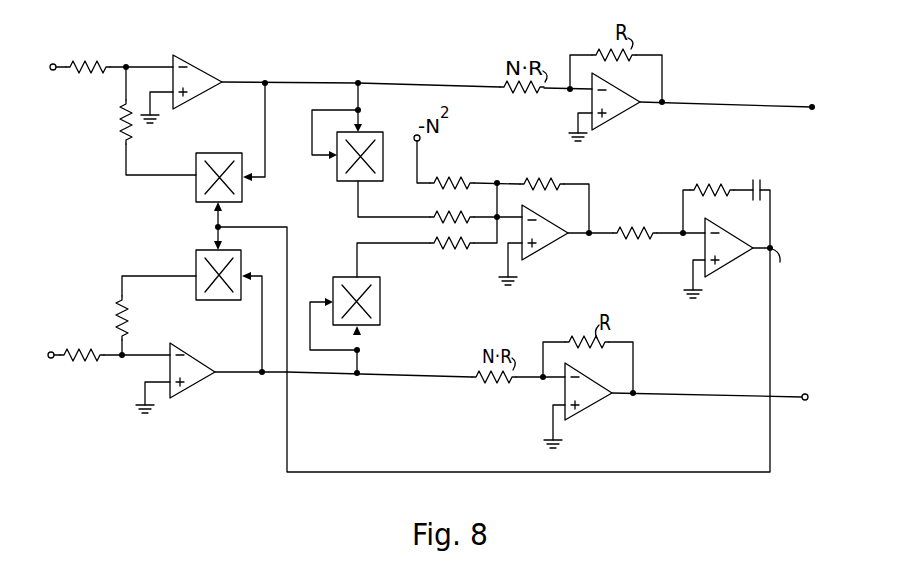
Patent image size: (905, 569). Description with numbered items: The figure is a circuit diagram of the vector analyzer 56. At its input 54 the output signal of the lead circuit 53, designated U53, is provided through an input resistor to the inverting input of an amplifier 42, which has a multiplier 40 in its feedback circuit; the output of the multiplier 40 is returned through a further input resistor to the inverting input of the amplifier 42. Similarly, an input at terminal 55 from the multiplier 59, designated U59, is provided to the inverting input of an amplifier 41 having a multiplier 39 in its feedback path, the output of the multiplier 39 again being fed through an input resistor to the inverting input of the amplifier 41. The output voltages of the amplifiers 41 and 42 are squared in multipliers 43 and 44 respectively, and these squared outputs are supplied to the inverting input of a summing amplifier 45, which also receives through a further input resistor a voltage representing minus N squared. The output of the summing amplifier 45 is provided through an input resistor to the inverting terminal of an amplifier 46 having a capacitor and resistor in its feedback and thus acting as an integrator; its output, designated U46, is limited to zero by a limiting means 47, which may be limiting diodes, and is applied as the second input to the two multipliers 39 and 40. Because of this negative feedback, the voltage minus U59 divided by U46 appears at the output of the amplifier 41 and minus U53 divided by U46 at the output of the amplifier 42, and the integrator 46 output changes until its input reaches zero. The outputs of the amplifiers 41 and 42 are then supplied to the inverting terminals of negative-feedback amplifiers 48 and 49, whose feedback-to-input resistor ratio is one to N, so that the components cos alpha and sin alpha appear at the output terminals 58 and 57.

The multiplier 39 is at (204, 184).
The multiplier 40 is at (204, 271).
The amplifier 41 is at (204, 71).
The amplifier 42 is at (193, 383).
The multiplier 43 is at (346, 163).
The multiplier 44 is at (341, 285).
The summing amplifier 45 is at (545, 240).
The integrator 46 is at (729, 243).
The limiting means 47 is at (746, 264).
The amplifier 48 is at (618, 104).
The amplifier 49 is at (591, 396).
The lead circuit 53 is at (108, 375).
The input 54 is at (60, 343).
The terminal 55 is at (53, 70).
The vector analyzer 56 is at (191, 491).
The output terminal 57 is at (808, 386).
The output terminal 58 is at (810, 110).
The multiplier 59 is at (110, 53).